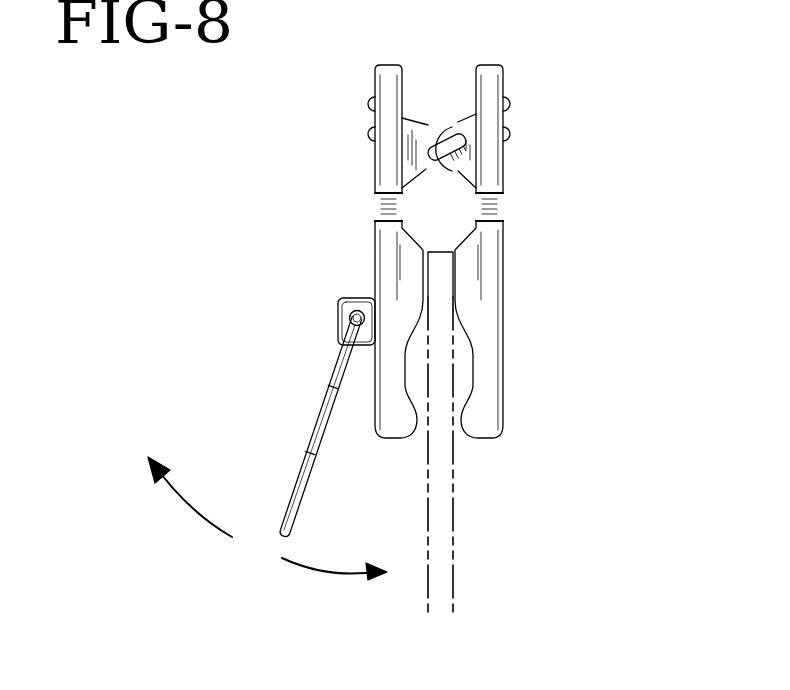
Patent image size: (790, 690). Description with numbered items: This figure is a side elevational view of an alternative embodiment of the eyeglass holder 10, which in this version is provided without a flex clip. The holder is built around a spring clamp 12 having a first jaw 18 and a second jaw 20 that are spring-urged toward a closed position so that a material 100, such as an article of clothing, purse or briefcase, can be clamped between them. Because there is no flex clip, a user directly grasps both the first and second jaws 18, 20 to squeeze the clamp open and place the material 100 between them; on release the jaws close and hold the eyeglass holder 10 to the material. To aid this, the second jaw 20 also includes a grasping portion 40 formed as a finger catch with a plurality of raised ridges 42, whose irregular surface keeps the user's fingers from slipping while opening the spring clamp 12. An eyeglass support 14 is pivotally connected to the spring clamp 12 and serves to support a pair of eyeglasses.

The eyeglass holder 10 is at (622, 142).
The spring clamp 12 is at (373, 182).
The eyeglass support 14 is at (300, 483).
The first jaw 18 is at (373, 267).
The second jaw 20 is at (505, 289).
The grasping portion 40 is at (504, 82).
The raised ridges 42 is at (368, 105).
The material 100 is at (445, 528).